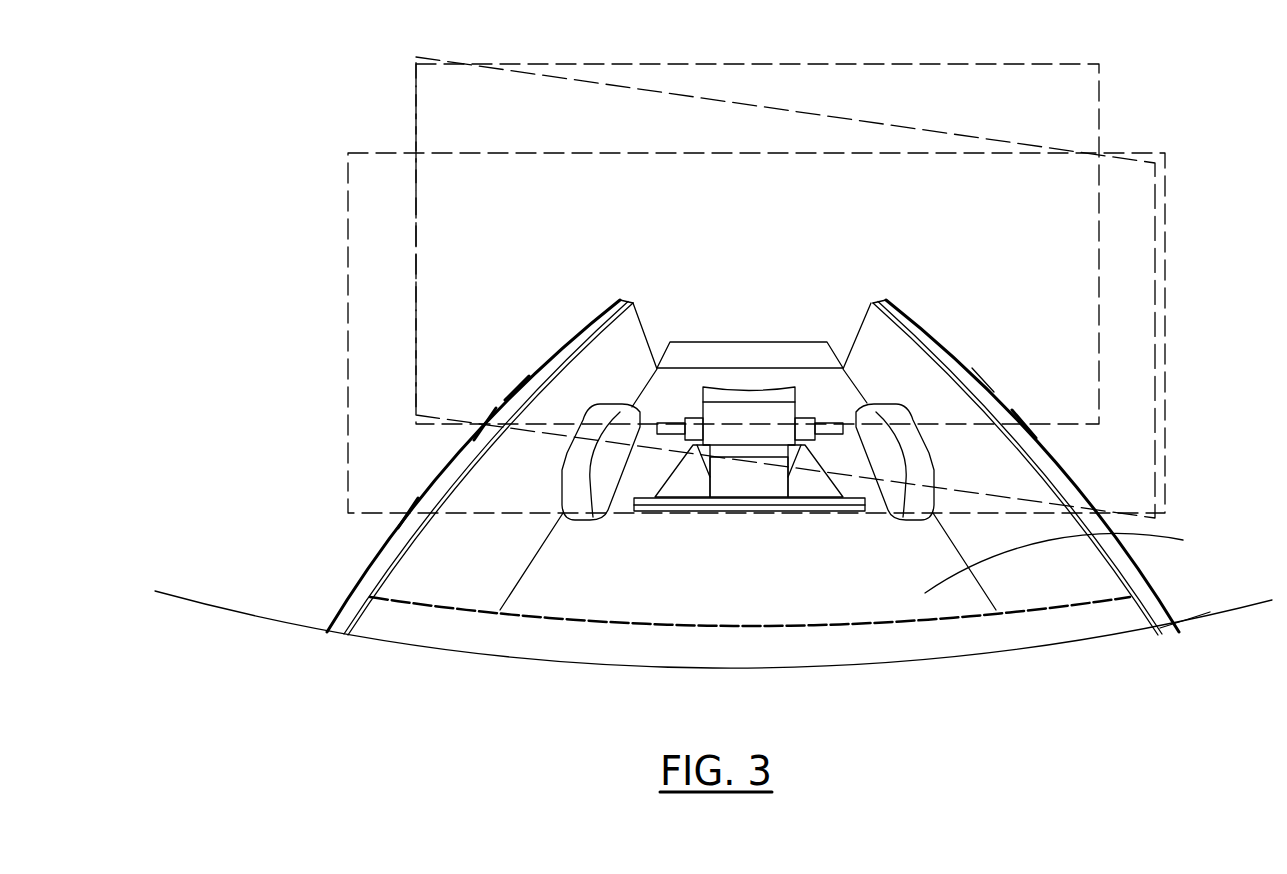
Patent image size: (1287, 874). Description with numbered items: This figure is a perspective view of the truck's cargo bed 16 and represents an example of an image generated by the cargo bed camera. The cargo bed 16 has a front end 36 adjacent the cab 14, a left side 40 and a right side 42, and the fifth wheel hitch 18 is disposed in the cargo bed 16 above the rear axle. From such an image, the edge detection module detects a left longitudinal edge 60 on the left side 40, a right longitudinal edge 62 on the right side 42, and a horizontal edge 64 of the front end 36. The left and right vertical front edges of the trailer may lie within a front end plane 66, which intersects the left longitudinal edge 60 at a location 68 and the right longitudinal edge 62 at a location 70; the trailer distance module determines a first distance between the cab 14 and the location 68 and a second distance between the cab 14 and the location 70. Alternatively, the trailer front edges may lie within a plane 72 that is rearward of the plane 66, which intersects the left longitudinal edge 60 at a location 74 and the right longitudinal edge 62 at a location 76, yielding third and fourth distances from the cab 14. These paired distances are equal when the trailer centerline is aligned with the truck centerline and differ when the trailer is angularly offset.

The cab 14 is at (1183, 645).
The cargo bed 16 is at (1070, 558).
The fifth wheel hitch 18 is at (785, 415).
The front end 36 is at (683, 638).
The left side 40 is at (938, 352).
The right side 42 is at (553, 358).
The left longitudinal edge 60 is at (983, 380).
The right longitudinal edge 62 is at (517, 388).
The horizontal edge 64 is at (805, 626).
The plane 66 is at (346, 250).
The location 68 is at (952, 133).
The location 70 is at (407, 513).
The plane 72 is at (963, 65).
The location 74 is at (1025, 423).
The location 76 is at (485, 424).